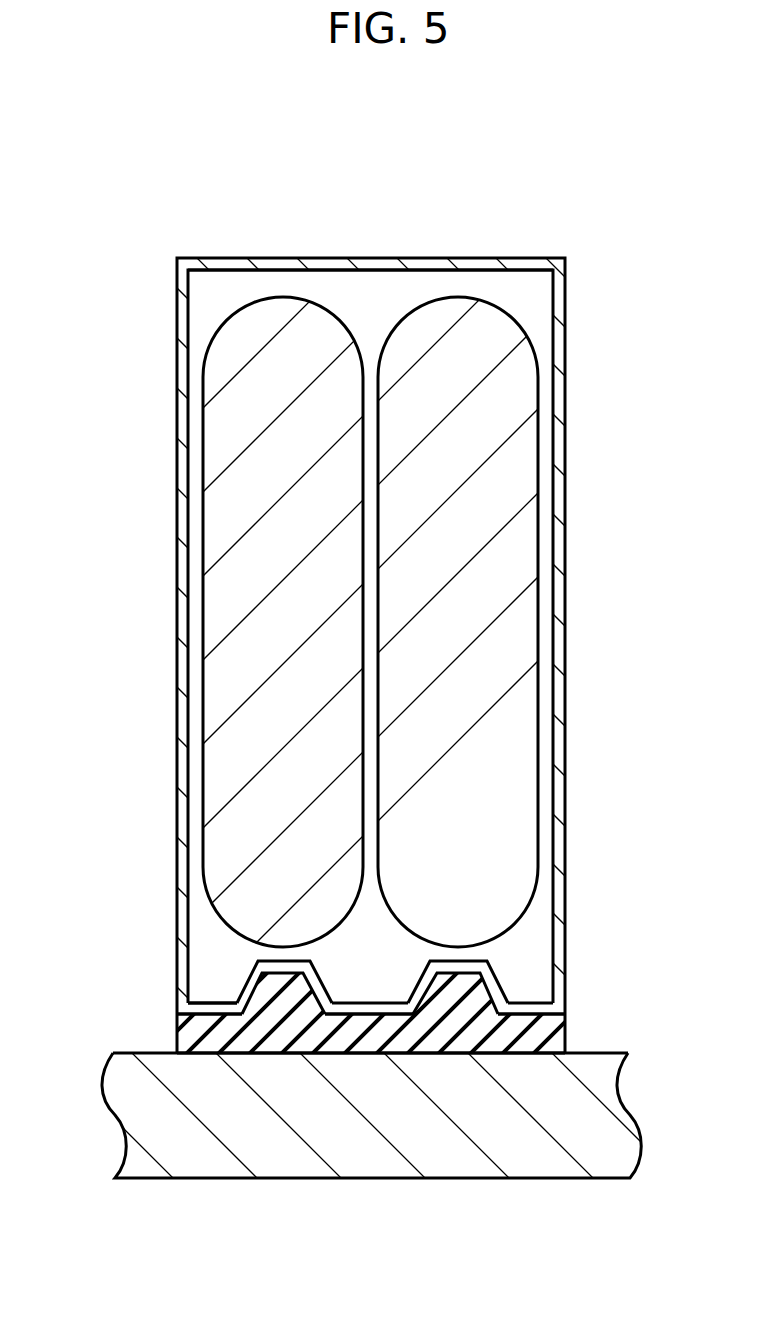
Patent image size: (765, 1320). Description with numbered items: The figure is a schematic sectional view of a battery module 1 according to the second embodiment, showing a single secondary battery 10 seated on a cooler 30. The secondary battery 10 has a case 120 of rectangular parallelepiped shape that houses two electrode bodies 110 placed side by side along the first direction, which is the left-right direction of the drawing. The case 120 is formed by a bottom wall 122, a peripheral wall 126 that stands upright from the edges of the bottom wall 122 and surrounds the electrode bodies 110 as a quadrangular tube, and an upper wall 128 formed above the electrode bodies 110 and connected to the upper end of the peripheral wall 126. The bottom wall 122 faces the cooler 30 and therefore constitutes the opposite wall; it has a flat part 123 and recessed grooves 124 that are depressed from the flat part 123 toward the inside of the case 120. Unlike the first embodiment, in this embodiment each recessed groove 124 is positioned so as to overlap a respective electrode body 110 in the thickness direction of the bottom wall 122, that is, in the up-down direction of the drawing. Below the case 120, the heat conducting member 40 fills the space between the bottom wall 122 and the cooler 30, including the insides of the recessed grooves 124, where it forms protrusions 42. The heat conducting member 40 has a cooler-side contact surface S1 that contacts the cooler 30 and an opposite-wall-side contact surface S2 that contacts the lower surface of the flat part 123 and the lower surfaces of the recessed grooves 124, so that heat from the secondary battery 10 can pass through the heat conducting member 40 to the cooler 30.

The battery module 1 is at (142, 178).
The secondary battery 10 is at (205, 228).
The case 120 is at (177, 258).
The peripheral wall 126 is at (183, 752).
The upper wall 128 is at (248, 270).
The electrode body 110 is at (299, 297).
The bottom wall 122 is at (665, 865).
The flat part 123 is at (528, 1006).
The recessed groove 124 is at (283, 961).
The opposite-wall-side contact surface S2 is at (220, 1003).
The cooler-side contact surface S1 is at (200, 1053).
The cooler 30 is at (378, 1137).
The heat conducting member 40 is at (227, 1033).
The protrusion 42 is at (288, 998).